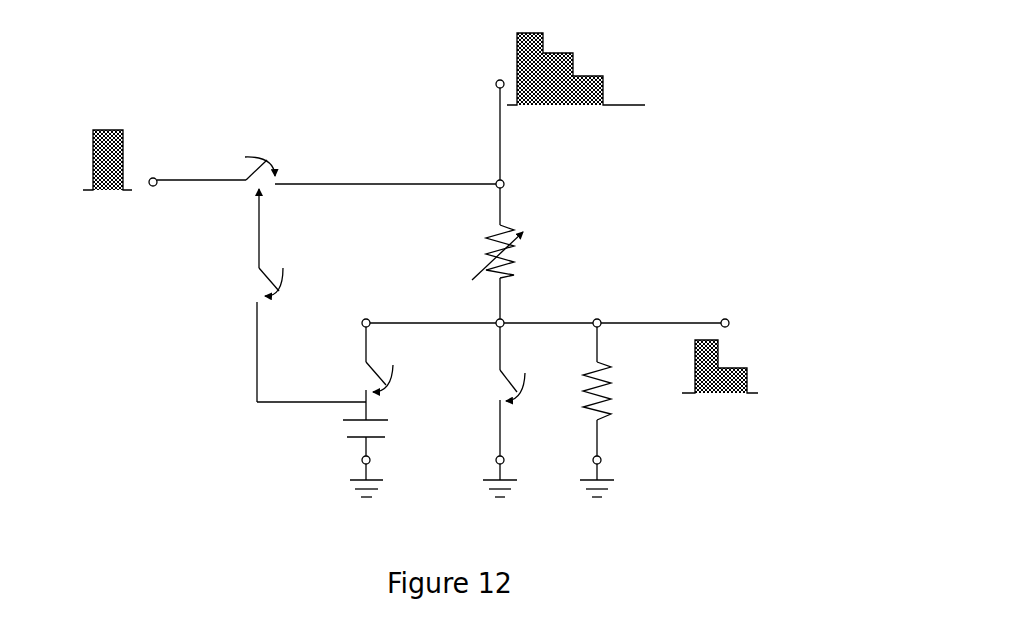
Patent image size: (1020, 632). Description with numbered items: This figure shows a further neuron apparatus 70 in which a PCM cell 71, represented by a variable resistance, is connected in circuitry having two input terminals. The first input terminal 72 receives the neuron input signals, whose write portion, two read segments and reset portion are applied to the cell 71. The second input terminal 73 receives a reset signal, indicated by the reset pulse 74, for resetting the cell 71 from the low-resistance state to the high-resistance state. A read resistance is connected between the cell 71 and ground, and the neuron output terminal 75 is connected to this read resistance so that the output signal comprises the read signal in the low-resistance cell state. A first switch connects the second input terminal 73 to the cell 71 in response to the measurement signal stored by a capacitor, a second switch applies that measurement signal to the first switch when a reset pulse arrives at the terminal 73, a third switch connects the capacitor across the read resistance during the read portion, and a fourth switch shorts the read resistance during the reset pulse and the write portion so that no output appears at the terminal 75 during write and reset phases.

The neuron apparatus 70 is at (715, 173).
The PCM cell 71 is at (534, 238).
The first input terminal 72 is at (495, 86).
The second input terminal 73 is at (156, 180).
The reset pulse 74 is at (125, 143).
The neuron output terminal 75 is at (729, 320).